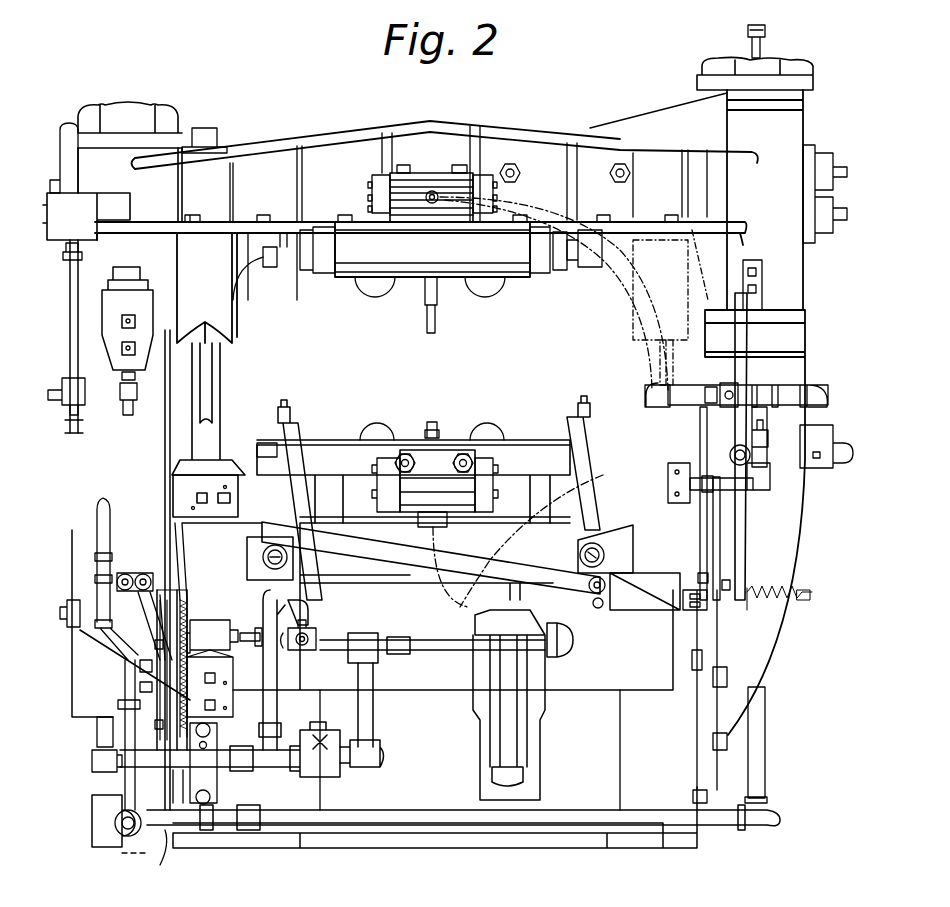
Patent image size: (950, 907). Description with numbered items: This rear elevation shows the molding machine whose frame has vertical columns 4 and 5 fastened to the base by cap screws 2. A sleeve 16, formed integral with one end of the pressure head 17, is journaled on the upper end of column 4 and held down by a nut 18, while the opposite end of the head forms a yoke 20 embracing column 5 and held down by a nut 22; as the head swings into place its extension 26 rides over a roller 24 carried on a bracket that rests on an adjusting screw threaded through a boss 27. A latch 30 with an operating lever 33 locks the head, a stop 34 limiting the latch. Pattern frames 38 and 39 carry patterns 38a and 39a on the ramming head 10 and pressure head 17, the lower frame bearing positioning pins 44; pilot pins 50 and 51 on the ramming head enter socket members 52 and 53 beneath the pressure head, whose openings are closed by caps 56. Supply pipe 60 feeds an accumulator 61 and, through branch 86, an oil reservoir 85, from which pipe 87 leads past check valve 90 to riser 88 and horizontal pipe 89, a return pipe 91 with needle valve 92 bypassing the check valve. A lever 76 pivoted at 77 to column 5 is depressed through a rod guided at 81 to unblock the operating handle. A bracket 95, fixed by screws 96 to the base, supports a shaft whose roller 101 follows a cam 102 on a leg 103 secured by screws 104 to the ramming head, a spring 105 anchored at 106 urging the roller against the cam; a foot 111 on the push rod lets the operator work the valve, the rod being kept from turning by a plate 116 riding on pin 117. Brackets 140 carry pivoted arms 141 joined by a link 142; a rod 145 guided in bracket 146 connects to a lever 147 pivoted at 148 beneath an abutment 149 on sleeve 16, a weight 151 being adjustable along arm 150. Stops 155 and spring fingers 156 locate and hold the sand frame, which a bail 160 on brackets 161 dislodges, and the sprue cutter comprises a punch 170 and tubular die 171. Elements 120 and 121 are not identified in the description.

The cap screws 2 is at (730, 720).
The vertical column 4 is at (800, 515).
The vertical column 5 is at (131, 570).
The ramming head 10 is at (393, 580).
The sleeve 16 is at (787, 200).
The pressure head 17 is at (504, 148).
The nut 18 is at (803, 68).
The yoke 20 is at (130, 185).
The nut 22 is at (180, 110).
The roller 24 is at (133, 287).
The extension 26 is at (137, 378).
The boss 27 is at (135, 400).
The latch 30 is at (71, 325).
The lever 33 is at (66, 140).
The stop 34 is at (66, 176).
The pattern frame 38 is at (510, 438).
The pattern 38a is at (352, 430).
The pattern frame 39 is at (432, 249).
The pattern 39a is at (417, 296).
The positioning pins 44 is at (287, 407).
The pilot pin 50 is at (637, 357).
The pilot pin 51 is at (222, 378).
The socket member 52 is at (628, 327).
The socket member 53 is at (235, 322).
The caps 56 is at (218, 137).
The pipe 60 is at (463, 817).
The accumulator 61 is at (95, 800).
The lever 76 is at (80, 428).
The pivot 77 is at (86, 392).
The guide 81 is at (68, 262).
The oil reservoir 85 is at (72, 645).
The branch 86 is at (97, 520).
The pipe 87 is at (98, 733).
The riser 88 is at (372, 713).
The horizontal pipe 89 is at (437, 640).
The check valve 90 is at (320, 778).
The pipe 91 is at (273, 600).
The valve 92 is at (292, 652).
The bracket 95 is at (211, 628).
The screws 96 is at (220, 690).
The roller 101 is at (218, 561).
The cam 102 is at (140, 670).
The leg 103 is at (168, 548).
The screws 104 is at (210, 492).
The spring 105 is at (218, 783).
The anchorage 106 is at (160, 865).
The foot 111 is at (158, 575).
The plate 116 is at (137, 573).
The pin 117 is at (115, 583).
The cylinder 120 is at (434, 173).
The pipe 121 is at (624, 298).
The brackets 140 is at (256, 535).
The arms 141 is at (562, 458).
The link 142 is at (360, 545).
The rod 145 is at (652, 612).
The bracket 146 is at (722, 610).
The lever 147 is at (746, 530).
The pivot 148 is at (762, 482).
The abutment 149 is at (763, 288).
The arm 150 is at (783, 445).
The weight 151 is at (818, 470).
The stops 155 is at (287, 275).
The spring fingers 156 is at (333, 247).
The bail 160 is at (766, 46).
The brackets 161 is at (266, 270).
The punch 170 is at (440, 300).
The tubular die 171 is at (432, 422).